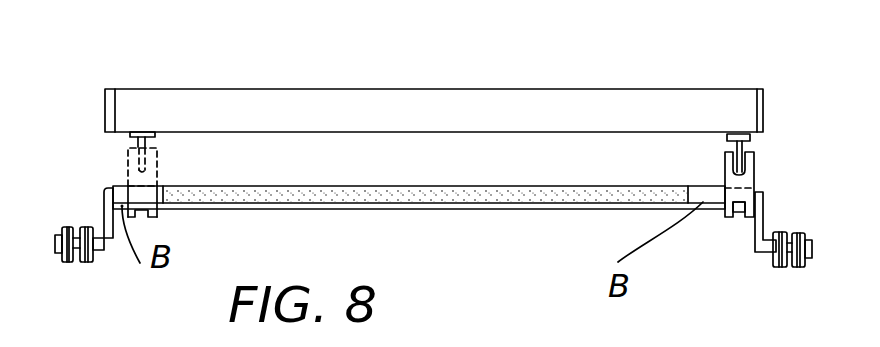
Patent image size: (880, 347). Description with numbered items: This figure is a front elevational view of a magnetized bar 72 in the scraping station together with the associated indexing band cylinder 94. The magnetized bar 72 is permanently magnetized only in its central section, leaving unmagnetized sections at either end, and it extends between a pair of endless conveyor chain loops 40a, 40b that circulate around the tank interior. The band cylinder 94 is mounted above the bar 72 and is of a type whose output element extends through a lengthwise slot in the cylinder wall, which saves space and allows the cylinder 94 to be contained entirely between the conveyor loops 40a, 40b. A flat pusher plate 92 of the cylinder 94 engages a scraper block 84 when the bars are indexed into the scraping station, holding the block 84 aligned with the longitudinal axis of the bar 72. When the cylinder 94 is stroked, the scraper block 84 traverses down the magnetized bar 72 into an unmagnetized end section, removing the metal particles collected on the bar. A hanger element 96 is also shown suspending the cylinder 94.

The indexing band cylinder 94 is at (407, 63).
The hanger pin 96 is at (727, 135).
The flat pusher plate 92 is at (736, 165).
The scraper block 84 is at (732, 200).
The magnetized bar 72 is at (488, 204).
The endless conveyor chain loop 40a is at (61, 223).
The endless conveyor chain loop 40b is at (795, 266).